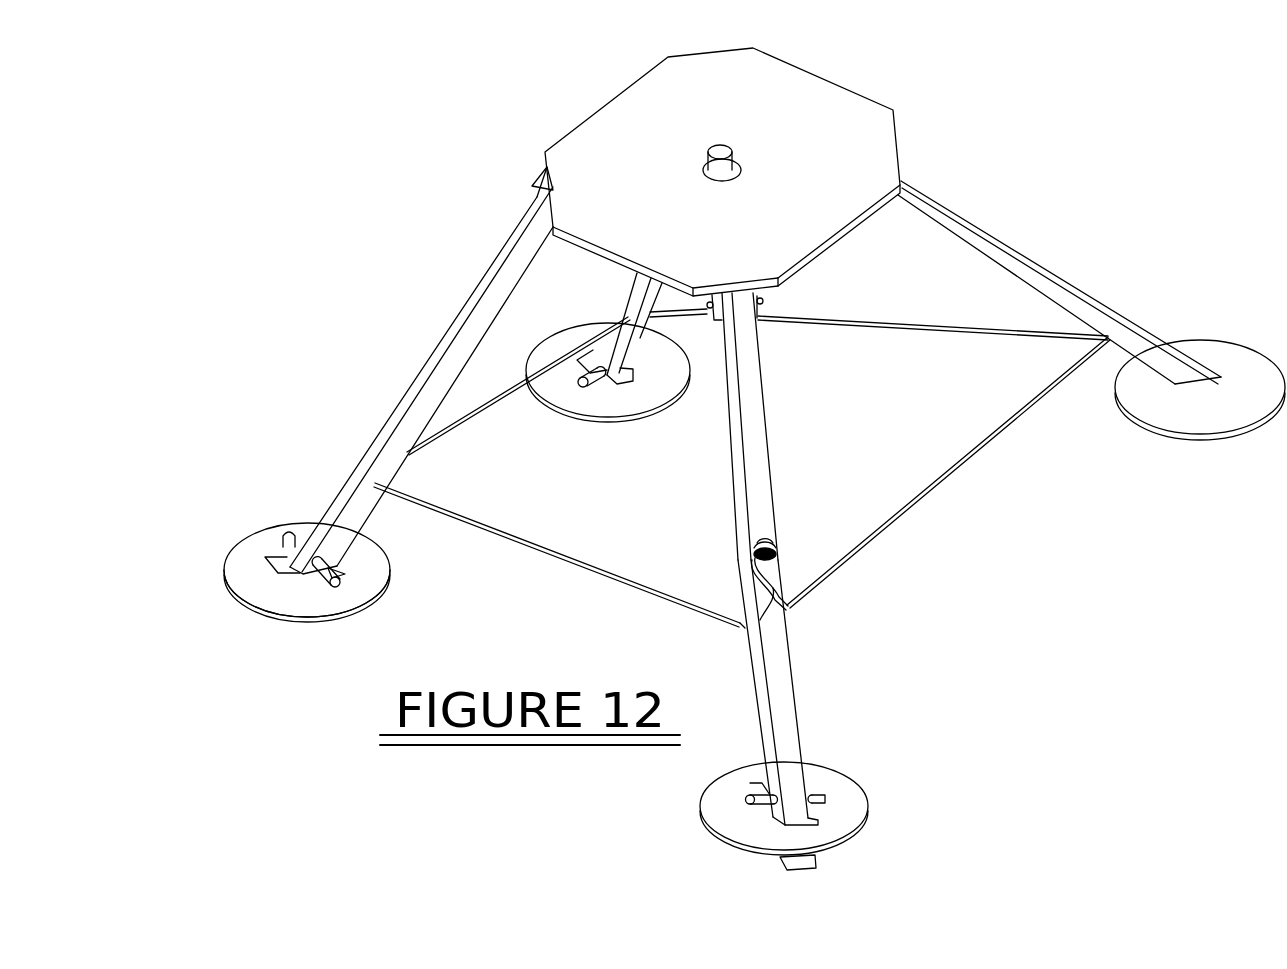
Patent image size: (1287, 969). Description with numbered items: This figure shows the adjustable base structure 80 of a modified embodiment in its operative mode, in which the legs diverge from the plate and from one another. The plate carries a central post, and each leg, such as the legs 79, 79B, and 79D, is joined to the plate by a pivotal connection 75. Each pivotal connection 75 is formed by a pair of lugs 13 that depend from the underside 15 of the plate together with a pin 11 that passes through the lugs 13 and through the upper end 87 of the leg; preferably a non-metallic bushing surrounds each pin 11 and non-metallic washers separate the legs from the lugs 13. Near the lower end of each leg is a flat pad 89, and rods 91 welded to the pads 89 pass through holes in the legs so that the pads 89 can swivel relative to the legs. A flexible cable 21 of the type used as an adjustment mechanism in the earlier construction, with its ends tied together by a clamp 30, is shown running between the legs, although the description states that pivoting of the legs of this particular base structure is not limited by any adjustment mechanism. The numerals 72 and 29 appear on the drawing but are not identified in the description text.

The platform 72 is at (793, 60).
The underside 15 is at (755, 140).
The pivotal connection 75 is at (533, 187).
The leg 79 is at (1004, 262).
The leg 79B is at (618, 310).
The leg 79D is at (785, 723).
The adjustable base structure 80 is at (340, 480).
The pin 11 is at (760, 303).
The lugs 13 is at (758, 318).
The upper end 87 is at (745, 372).
The flexible cable 21 is at (885, 520).
The clamp 30 is at (777, 552).
The foot pin 29 is at (338, 587).
The flat pads 89 is at (265, 590).
The rods 91 is at (823, 803).